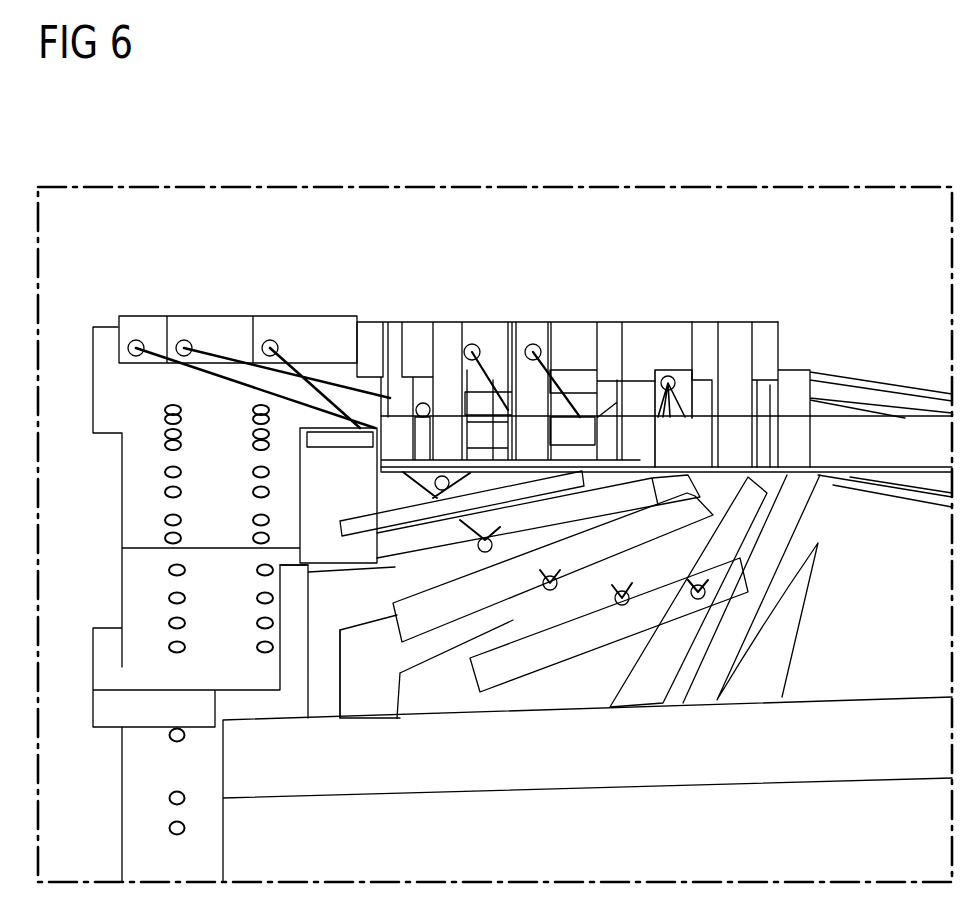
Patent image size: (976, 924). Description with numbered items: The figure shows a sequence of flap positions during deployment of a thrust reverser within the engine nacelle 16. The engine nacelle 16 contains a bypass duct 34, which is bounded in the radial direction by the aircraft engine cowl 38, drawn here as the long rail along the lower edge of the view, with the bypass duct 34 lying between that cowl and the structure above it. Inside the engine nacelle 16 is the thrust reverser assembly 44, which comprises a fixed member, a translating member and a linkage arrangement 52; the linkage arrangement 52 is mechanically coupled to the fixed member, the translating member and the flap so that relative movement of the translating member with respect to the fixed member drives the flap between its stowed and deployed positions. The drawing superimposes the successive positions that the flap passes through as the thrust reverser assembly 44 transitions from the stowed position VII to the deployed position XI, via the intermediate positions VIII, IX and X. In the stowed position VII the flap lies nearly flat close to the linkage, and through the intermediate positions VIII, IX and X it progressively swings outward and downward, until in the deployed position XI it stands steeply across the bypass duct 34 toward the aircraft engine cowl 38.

The engine nacelle 16 is at (283, 133).
The thrust reverser assembly 44 is at (414, 270).
The linkage arrangement 52 is at (558, 293).
The bypass duct 34 is at (362, 703).
The aircraft engine cowl 38 is at (482, 785).
The stowed position VII is at (345, 440).
The intermediate position VIII is at (370, 527).
The intermediate position IX is at (505, 660).
The intermediate position X is at (610, 655).
The deployed position XI is at (692, 665).